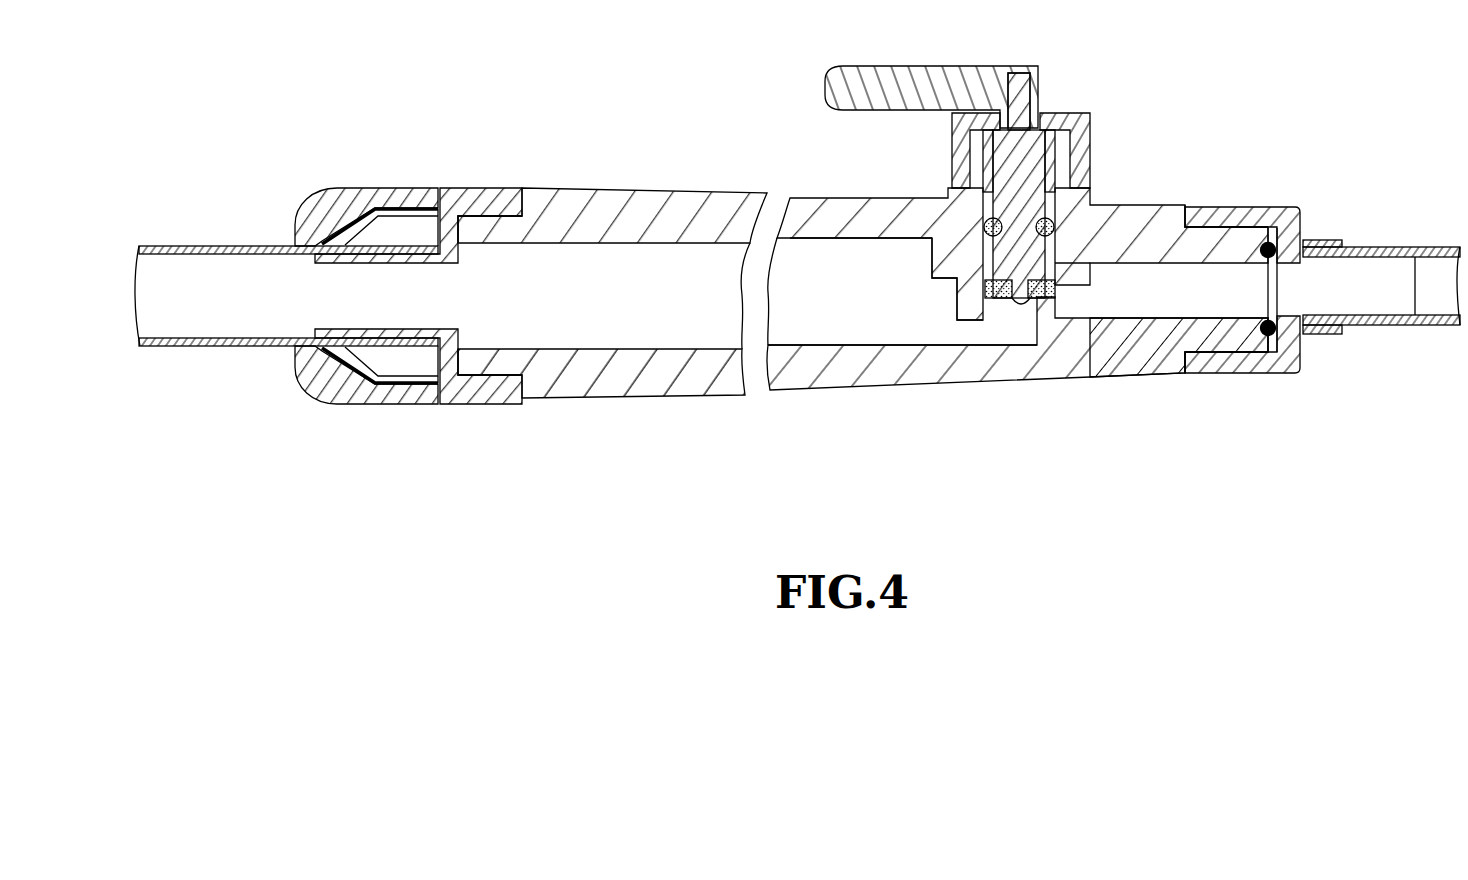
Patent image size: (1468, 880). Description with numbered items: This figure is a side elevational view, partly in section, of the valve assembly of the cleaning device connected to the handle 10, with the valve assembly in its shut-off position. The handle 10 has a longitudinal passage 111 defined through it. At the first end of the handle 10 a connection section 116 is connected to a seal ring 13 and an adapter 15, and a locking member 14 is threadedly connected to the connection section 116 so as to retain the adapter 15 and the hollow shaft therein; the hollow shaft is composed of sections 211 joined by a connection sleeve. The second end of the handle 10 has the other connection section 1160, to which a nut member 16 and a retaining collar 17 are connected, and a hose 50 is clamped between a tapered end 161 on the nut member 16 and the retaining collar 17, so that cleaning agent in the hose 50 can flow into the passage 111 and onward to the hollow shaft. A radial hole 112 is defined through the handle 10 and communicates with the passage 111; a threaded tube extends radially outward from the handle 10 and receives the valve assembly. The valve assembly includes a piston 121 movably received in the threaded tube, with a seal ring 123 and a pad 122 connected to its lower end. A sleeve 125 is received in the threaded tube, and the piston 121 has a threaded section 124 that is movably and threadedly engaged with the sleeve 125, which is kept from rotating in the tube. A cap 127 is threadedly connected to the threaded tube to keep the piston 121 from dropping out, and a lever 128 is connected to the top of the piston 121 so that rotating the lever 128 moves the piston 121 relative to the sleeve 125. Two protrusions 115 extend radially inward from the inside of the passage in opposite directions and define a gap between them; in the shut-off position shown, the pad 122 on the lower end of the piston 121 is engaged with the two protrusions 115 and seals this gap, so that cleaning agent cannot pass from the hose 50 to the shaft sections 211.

The handle 10 is at (636, 182).
The seal ring 13 is at (1273, 230).
The locking member 14 is at (1292, 363).
The adapter 15 is at (1335, 236).
The nut member 16 is at (478, 413).
The retaining collar 17 is at (328, 390).
The hose 50 is at (228, 347).
The longitudinal passage 111 is at (878, 327).
The radial hole 112 is at (987, 315).
The protrusions 115 is at (993, 305).
The connection section 116 is at (1218, 233).
The piston 121 is at (1008, 258).
The pad 122 is at (1045, 298).
The seal ring 123 is at (1047, 225).
The threaded section 124 is at (997, 160).
The sleeve 125 is at (1053, 128).
The cap 127 is at (1080, 158).
The lever 128 is at (958, 66).
The tapered end 161 is at (347, 233).
The sections 211 is at (1423, 247).
The connection section 1160 is at (478, 228).